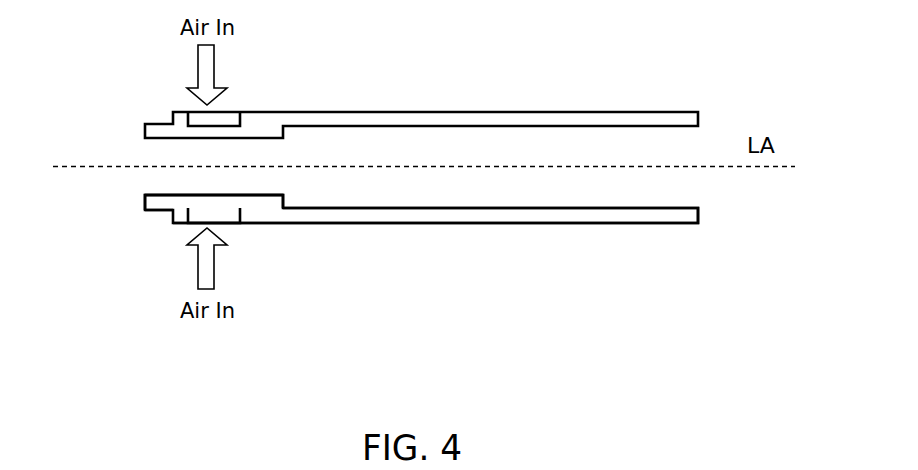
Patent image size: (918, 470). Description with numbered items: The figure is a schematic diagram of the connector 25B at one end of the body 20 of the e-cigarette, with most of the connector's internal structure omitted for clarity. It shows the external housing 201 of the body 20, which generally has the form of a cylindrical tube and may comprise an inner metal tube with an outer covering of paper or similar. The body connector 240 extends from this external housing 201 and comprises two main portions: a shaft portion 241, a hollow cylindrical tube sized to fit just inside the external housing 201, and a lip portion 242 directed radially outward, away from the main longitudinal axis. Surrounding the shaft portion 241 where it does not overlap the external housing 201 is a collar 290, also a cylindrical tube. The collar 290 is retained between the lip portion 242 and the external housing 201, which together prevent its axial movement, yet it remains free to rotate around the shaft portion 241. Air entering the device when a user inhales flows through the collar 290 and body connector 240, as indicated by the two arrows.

The body 20 is at (517, 293).
The external housing 201 is at (465, 223).
The body connector 240 is at (161, 128).
The lip portion 242 is at (176, 220).
The collar 290 is at (236, 112).
The shaft portion 241 is at (268, 206).
The connector 25B is at (145, 300).